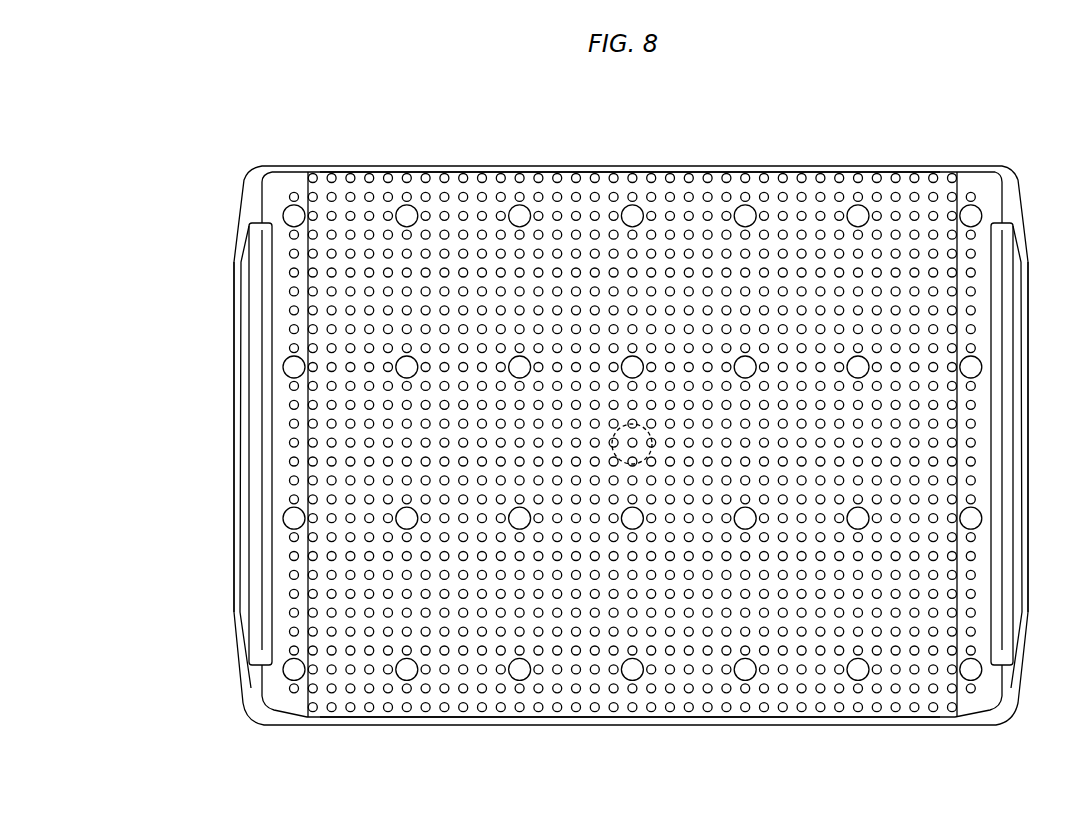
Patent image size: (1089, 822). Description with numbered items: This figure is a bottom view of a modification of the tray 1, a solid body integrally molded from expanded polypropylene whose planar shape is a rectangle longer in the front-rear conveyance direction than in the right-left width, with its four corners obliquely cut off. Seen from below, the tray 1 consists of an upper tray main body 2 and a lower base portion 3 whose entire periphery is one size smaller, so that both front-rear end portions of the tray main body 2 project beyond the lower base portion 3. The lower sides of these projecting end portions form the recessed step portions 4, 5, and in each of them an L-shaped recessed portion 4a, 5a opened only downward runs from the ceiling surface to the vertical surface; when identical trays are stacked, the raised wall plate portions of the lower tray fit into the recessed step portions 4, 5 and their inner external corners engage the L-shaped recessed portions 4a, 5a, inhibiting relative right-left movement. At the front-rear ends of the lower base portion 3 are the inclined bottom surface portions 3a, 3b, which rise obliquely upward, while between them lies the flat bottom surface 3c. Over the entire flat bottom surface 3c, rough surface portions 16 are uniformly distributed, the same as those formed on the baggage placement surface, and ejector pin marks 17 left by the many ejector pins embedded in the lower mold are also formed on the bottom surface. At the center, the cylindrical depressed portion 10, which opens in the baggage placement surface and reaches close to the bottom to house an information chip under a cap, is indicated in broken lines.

The tray 1 is at (816, 152).
The tray main body 2 is at (716, 156).
The lower base portion 3 is at (562, 730).
The inclined bottom surface portion 3a is at (292, 297).
The inclined bottom surface portion 3b is at (985, 458).
The flat bottom surface 3c is at (564, 195).
The recessed step portion 4 is at (252, 672).
The L-shaped recessed portion 4a is at (262, 495).
The recessed step portion 5 is at (1012, 212).
The L-shaped recessed portion 5a is at (1003, 405).
The cylindrical depressed portion 10 is at (651, 432).
The rough surface portions 16 is at (388, 176).
The ejector pin marks 17 is at (518, 212).